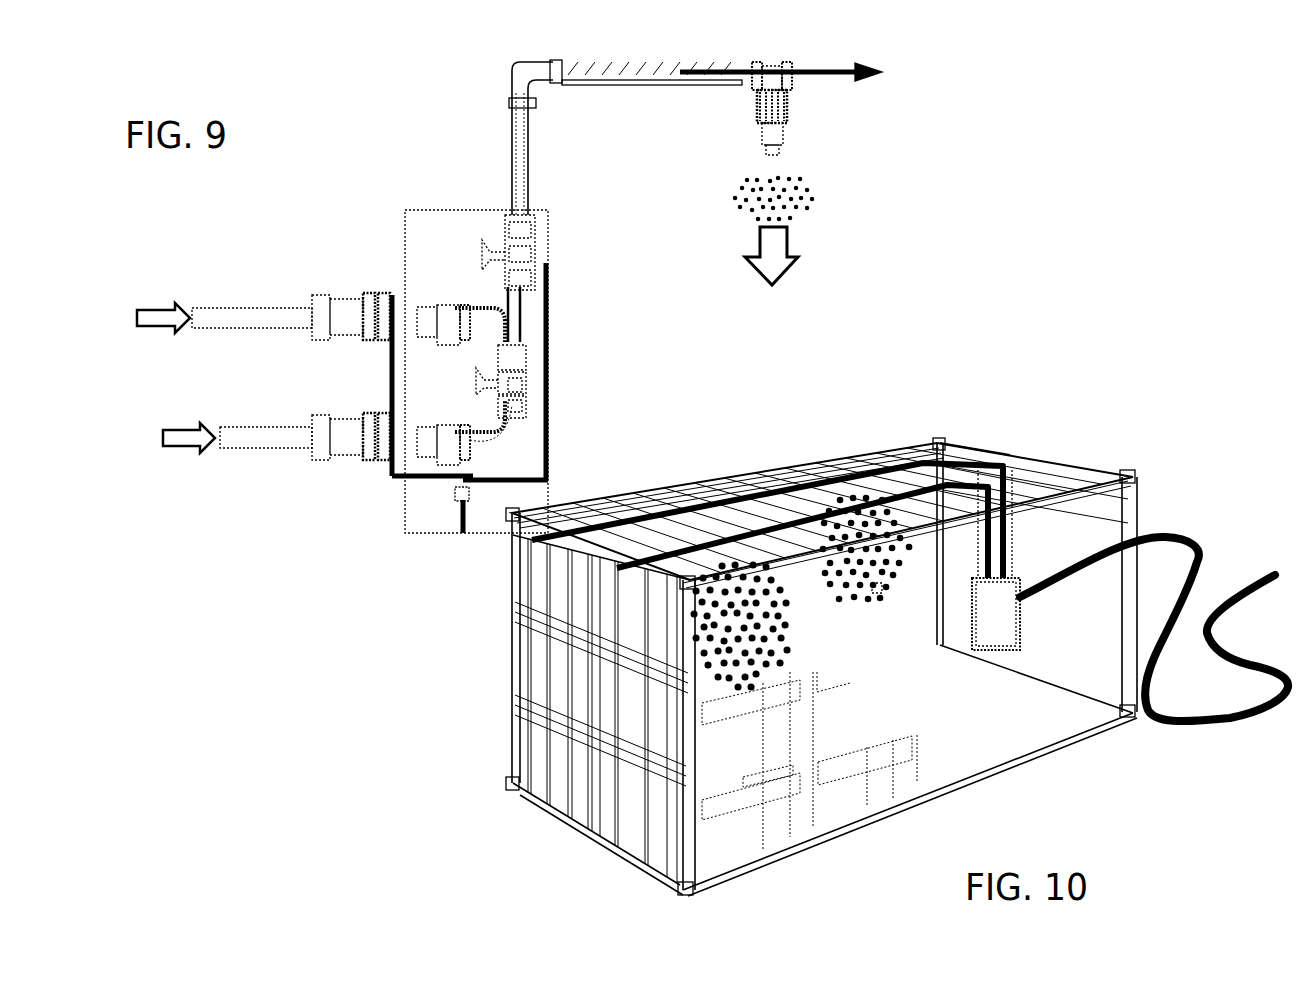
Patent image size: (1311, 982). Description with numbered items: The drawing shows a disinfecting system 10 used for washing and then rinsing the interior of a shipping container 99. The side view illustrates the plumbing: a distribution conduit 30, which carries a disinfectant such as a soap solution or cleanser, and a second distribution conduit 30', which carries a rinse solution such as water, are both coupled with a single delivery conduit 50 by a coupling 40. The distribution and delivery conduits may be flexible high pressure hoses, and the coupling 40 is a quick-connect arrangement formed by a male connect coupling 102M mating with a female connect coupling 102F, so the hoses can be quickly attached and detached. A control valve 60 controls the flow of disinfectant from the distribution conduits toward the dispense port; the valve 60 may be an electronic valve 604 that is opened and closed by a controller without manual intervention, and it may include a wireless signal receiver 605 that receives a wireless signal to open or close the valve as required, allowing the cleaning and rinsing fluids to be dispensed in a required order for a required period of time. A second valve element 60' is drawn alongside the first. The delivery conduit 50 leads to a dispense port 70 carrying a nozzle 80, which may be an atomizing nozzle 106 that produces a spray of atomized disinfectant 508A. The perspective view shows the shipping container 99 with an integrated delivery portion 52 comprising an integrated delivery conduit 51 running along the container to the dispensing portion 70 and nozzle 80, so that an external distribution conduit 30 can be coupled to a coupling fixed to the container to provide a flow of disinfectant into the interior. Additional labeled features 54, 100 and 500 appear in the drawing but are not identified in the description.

In FIG. 9, the disinfecting system 10 is at (403, 100).
In FIG. 10, the disinfecting system 10 is at (1119, 433).
In FIG. 9, the distribution conduit 30 is at (224, 283).
In FIG. 10, the distribution conduit 30 is at (1154, 629).
In FIG. 9, the distribution conduit 30' is at (237, 481).
In FIG. 9, the coupling 40 is at (372, 462).
In FIG. 9, the delivery conduit 50 is at (522, 145).
In FIG. 10, the integrated delivery conduit 51 is at (820, 472).
In FIG. 10, the integrated delivery portion 52 is at (888, 468).
In FIG. 10, the connection box 54 is at (1012, 592).
In FIG. 9, the control valve 60 is at (505, 217).
In FIG. 9, the second filter 60' is at (546, 381).
In FIG. 9, the dispense port 70 is at (778, 70).
In FIG. 10, the dispense port 70 is at (853, 500).
In FIG. 9, the nozzle 80 is at (775, 157).
In FIG. 10, the nozzle 80 is at (745, 568).
In FIG. 10, the shipping container 99 is at (975, 448).
In FIG. 10, the shipping container 100 is at (801, 667).
In FIG. 9, the female connect coupling 102F is at (376, 305).
In FIG. 9, the male connect coupling 102M is at (438, 340).
In FIG. 9, the atomizing nozzle 106 is at (778, 130).
In FIG. 10, the conduit 500 is at (992, 475).
In FIG. 10, the atomized disinfectant 508A is at (880, 595).
In FIG. 9, the electronic valve 604 is at (515, 385).
In FIG. 9, the wireless signal receiver 605 is at (512, 408).